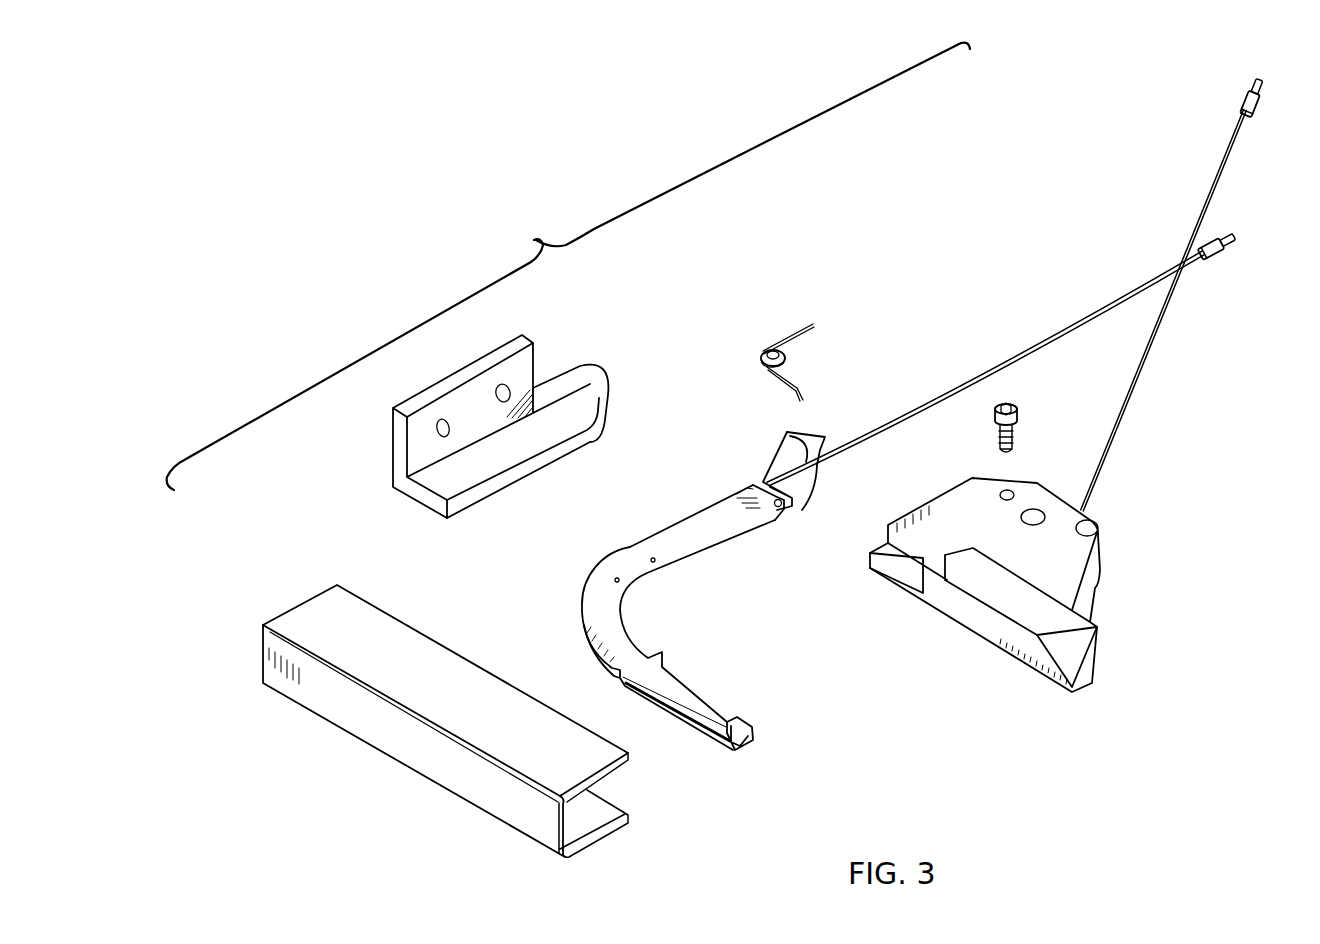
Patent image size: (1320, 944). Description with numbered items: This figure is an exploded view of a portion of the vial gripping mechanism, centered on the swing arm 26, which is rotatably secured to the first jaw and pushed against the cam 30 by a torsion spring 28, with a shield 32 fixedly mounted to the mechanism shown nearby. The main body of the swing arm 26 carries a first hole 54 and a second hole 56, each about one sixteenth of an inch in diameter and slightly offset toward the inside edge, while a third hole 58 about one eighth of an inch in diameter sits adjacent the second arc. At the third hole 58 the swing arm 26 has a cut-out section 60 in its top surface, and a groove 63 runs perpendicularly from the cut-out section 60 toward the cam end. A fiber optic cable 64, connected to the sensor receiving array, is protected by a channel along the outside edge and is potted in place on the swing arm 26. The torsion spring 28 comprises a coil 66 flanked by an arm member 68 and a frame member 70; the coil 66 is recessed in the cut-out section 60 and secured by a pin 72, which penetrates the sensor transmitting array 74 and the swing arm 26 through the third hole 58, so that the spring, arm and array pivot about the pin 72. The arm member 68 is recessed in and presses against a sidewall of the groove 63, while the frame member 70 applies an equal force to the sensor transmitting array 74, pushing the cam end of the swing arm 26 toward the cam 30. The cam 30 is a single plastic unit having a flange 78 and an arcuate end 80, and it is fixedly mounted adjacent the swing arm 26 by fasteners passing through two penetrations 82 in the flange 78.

The swing arm 26 is at (706, 596).
The torsion spring 28 is at (799, 347).
The cam 30 is at (498, 419).
The shield 32 is at (645, 793).
The first hole 54 is at (619, 581).
The second hole 56 is at (655, 561).
The third hole 58 is at (766, 481).
The cut-out section 60 is at (782, 503).
The groove 63 is at (803, 462).
The fiber optic cable 64 is at (1122, 297).
The coil 66 is at (758, 360).
The arm member 68 is at (803, 325).
The frame member 70 is at (797, 381).
The pin 72 is at (1030, 407).
The sensor transmitting array 74 is at (1058, 545).
The flange 78 is at (437, 388).
The arcuate end 80 is at (603, 367).
The penetrations 82 is at (503, 385).